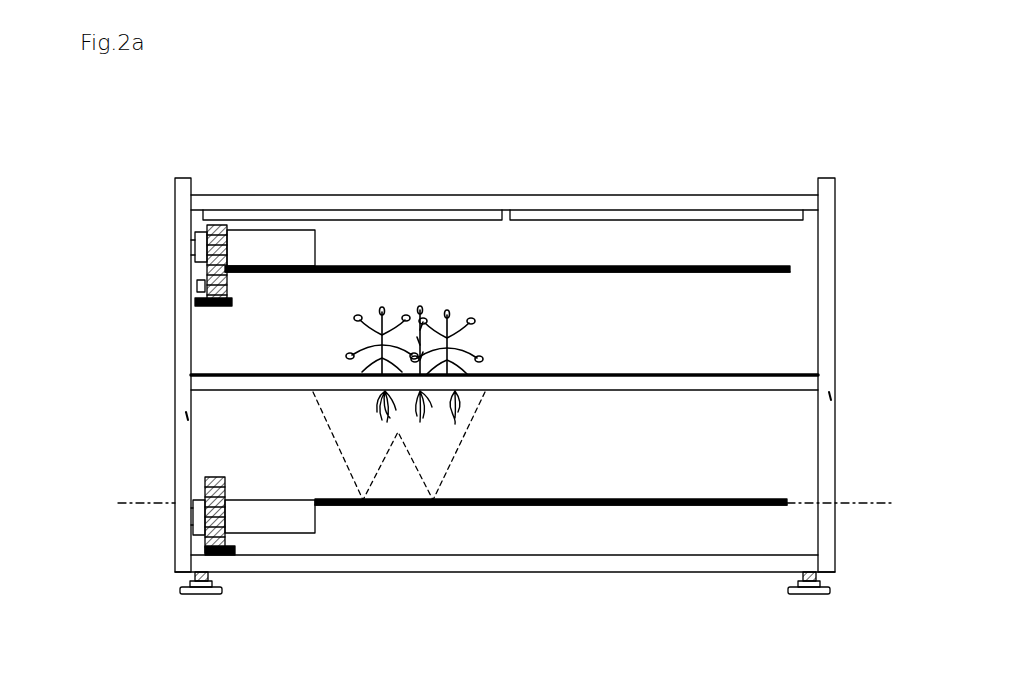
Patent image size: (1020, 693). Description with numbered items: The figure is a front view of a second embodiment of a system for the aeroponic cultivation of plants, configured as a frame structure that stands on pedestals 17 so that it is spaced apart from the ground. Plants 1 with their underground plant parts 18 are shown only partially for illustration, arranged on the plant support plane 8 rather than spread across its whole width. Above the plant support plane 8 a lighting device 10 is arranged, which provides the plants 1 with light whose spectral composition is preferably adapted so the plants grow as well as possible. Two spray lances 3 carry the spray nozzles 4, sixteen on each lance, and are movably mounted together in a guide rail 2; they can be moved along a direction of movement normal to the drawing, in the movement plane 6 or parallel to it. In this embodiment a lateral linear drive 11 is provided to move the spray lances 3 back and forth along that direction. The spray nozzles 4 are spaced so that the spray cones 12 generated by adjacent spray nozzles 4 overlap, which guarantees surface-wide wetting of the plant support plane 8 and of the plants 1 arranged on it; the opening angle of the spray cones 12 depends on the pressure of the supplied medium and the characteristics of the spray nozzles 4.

The plants 1 is at (360, 346).
The guide rail 2 is at (195, 250).
The spray lances 3 is at (755, 268).
The spray nozzles 4 is at (640, 273).
The movement plane 6 is at (865, 505).
The plant support plane 8 is at (805, 382).
The lighting device 10 is at (560, 218).
The linear drive 11 is at (285, 248).
The spray cones 12 is at (335, 437).
The pedestals 17 is at (190, 595).
The underground plant parts 18 is at (385, 410).